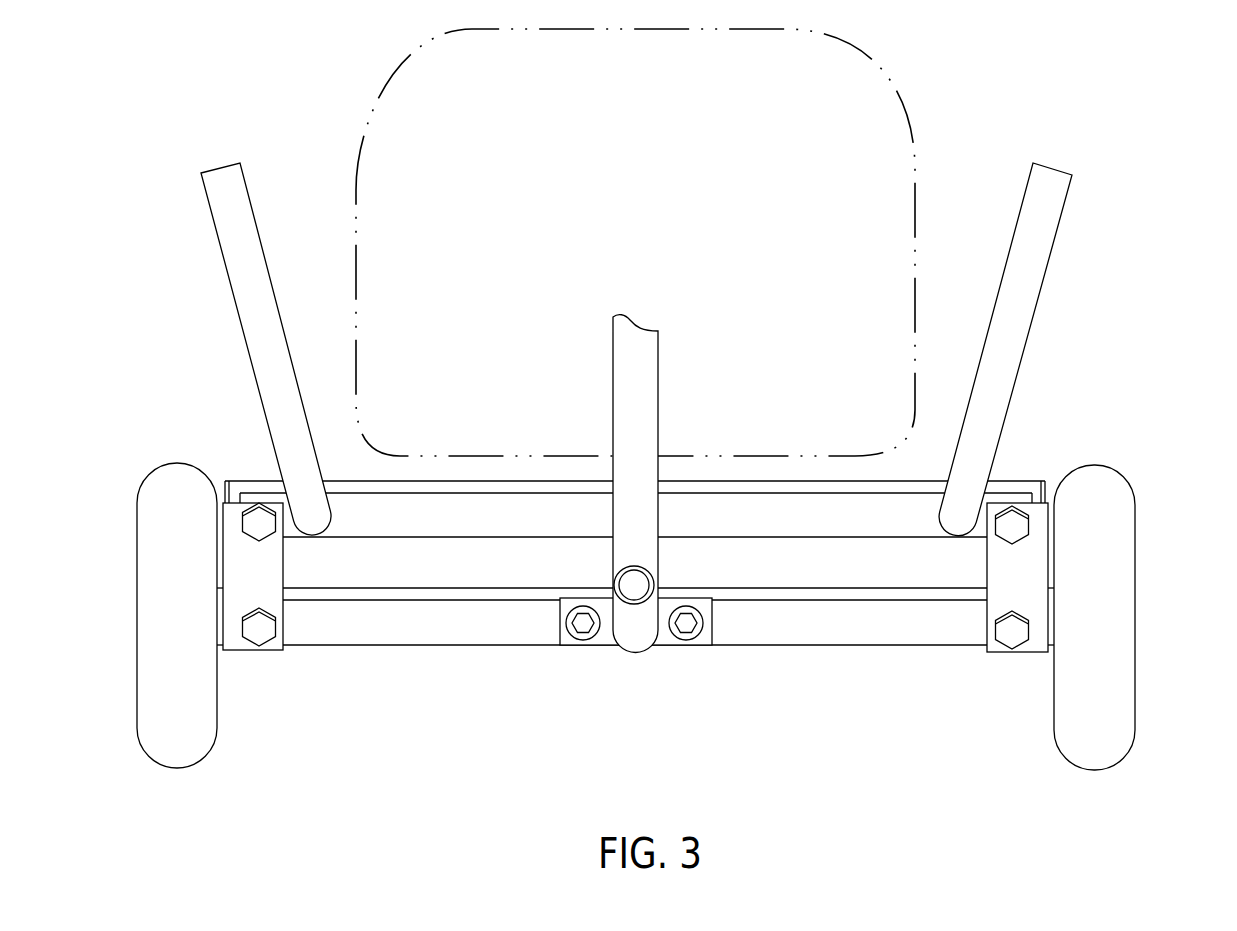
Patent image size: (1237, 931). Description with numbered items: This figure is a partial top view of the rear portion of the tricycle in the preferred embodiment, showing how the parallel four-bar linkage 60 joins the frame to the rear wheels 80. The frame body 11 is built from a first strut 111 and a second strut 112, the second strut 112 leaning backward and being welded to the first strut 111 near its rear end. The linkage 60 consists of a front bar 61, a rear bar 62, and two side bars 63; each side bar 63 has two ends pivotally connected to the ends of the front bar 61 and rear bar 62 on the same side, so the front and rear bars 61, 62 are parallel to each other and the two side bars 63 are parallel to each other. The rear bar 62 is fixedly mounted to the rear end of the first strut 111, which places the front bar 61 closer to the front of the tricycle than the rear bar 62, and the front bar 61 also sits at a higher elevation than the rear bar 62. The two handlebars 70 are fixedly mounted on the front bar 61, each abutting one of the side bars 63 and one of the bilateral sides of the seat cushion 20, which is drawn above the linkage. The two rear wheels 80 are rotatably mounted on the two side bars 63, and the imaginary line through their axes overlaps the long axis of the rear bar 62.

The frame body 11 is at (553, 559).
The first strut 111 is at (632, 605).
The second strut 112 is at (621, 550).
The seat cushion 20 is at (857, 137).
The parallel four-bar linkage 60 is at (635, 660).
The front bar 61 is at (853, 516).
The rear bar 62 is at (912, 625).
The side bars 63 is at (790, 788).
The handlebars 70 is at (1028, 258).
The rear wheels 80 is at (1100, 503).